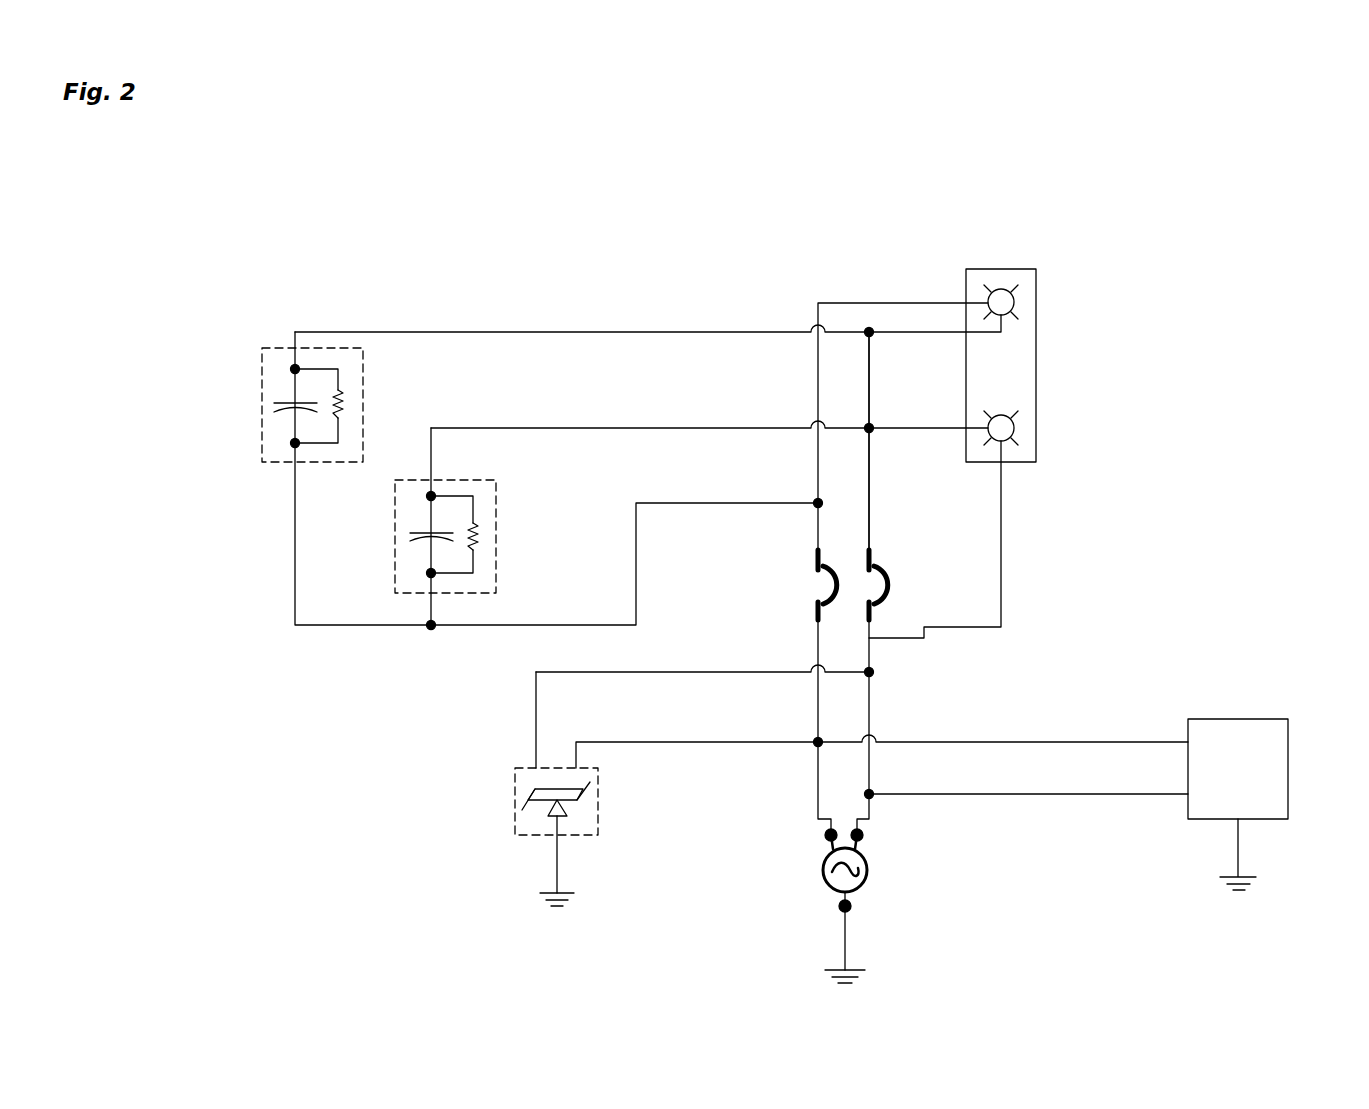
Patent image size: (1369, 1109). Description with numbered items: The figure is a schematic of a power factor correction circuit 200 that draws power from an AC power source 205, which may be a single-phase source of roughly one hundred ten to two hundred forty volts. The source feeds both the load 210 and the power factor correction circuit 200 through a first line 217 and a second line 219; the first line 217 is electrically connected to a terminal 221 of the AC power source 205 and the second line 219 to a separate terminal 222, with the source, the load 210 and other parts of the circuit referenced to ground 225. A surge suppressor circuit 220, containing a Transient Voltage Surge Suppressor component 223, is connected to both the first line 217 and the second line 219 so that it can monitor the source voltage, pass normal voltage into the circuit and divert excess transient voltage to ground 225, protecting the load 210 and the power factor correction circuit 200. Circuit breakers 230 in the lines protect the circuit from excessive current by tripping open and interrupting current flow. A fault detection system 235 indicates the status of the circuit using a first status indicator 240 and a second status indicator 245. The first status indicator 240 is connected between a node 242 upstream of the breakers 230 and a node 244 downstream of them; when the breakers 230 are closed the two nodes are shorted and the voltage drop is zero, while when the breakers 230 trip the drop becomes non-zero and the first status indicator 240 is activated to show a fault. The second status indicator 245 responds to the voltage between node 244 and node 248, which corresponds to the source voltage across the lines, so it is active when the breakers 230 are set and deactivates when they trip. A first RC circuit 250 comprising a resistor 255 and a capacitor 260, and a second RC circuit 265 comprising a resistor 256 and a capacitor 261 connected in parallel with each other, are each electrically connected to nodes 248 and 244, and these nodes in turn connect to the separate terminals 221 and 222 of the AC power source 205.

The power factor correction circuit 200 is at (1188, 182).
The AC power source 205 is at (826, 888).
The load 210 is at (1238, 719).
The first line 217 is at (870, 712).
The second line 219 is at (812, 718).
The surge suppressor circuit 220 is at (537, 823).
The terminal 221 is at (825, 837).
The terminal 222 is at (863, 833).
The Transient Voltage Surge Suppressor component 223 is at (592, 792).
The ground 225 is at (553, 884).
The circuit breakers 230 is at (840, 585).
The fault detection system 235 is at (1051, 331).
The first status indicator 240 is at (1014, 426).
The node 242 is at (872, 669).
The node 244 is at (870, 431).
The second status indicator 245 is at (1001, 289).
The node 248 is at (812, 502).
The first RC circuit 250 is at (310, 359).
The resistor 255 is at (345, 400).
The resistor 256 is at (480, 532).
The capacitor 260 is at (270, 411).
The capacitor 261 is at (410, 541).
The second RC circuit 265 is at (452, 580).